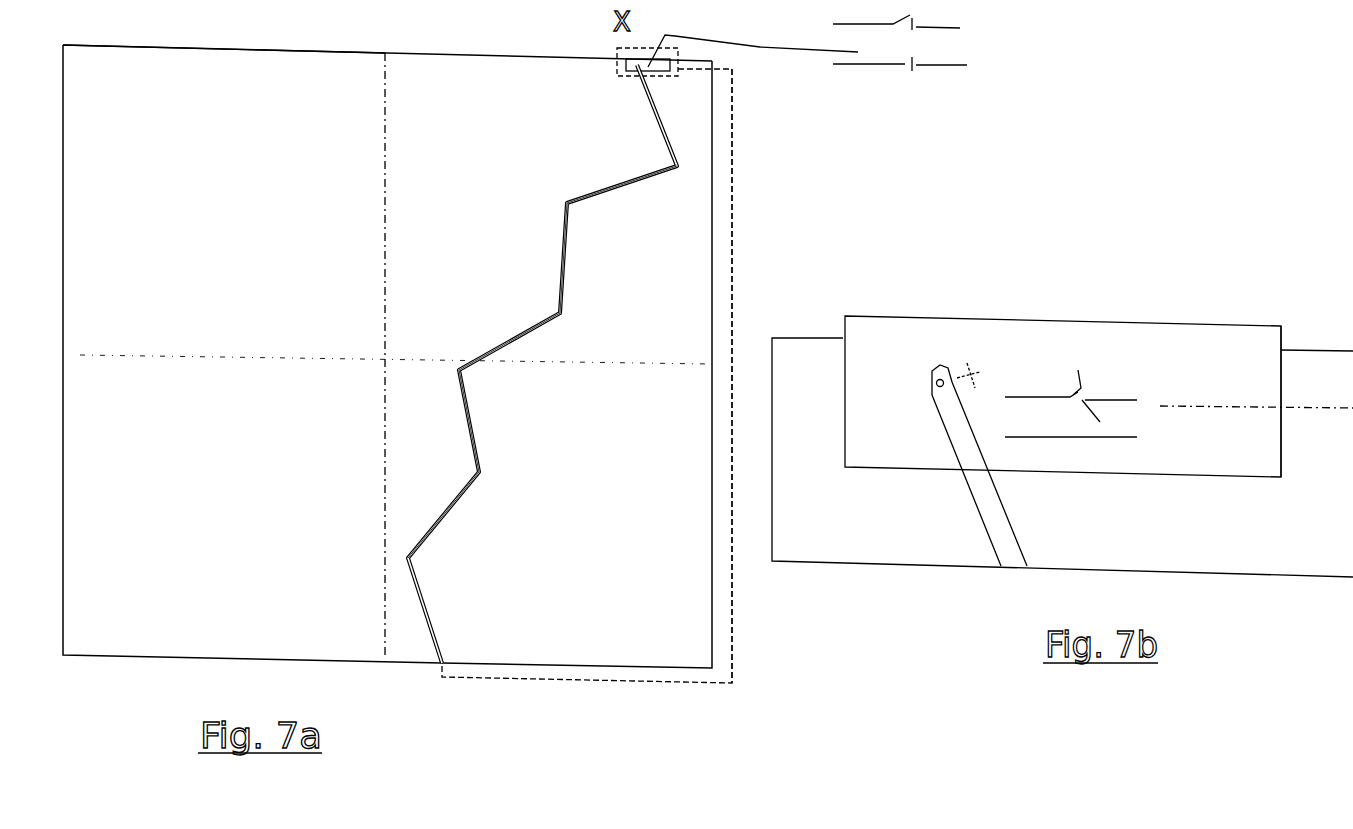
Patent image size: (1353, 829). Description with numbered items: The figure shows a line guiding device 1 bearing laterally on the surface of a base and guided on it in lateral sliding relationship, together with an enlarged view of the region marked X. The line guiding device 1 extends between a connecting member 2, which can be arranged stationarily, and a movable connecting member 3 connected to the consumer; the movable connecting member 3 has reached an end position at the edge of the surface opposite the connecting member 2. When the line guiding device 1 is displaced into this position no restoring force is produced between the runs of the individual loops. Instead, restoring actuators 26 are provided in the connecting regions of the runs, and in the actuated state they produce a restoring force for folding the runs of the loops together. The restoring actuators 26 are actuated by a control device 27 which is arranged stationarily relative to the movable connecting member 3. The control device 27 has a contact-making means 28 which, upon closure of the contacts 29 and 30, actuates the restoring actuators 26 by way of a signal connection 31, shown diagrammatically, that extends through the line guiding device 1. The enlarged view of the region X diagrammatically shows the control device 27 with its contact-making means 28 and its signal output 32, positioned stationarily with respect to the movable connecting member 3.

In FIG. 7A, the line guiding device 1 is at (438, 301).
In FIG. 7B, the line guiding device 1 is at (962, 497).
In FIG. 7A, the connecting member 2 is at (448, 660).
In FIG. 7B, the movable connecting member 3 is at (947, 372).
In FIG. 7A, the restoring actuators 26 is at (675, 166).
In FIG. 7A, the control device 27 is at (622, 72).
In FIG. 7B, the control device 27 is at (1082, 322).
In FIG. 7B, the contact-making means 28 is at (1095, 383).
In FIG. 7B, the contact 29 is at (1085, 438).
In FIG. 7B, the contact 30 is at (1045, 366).
In FIG. 7A, the signal connection 31 is at (732, 212).
In FIG. 7B, the signal output 32 is at (1308, 412).